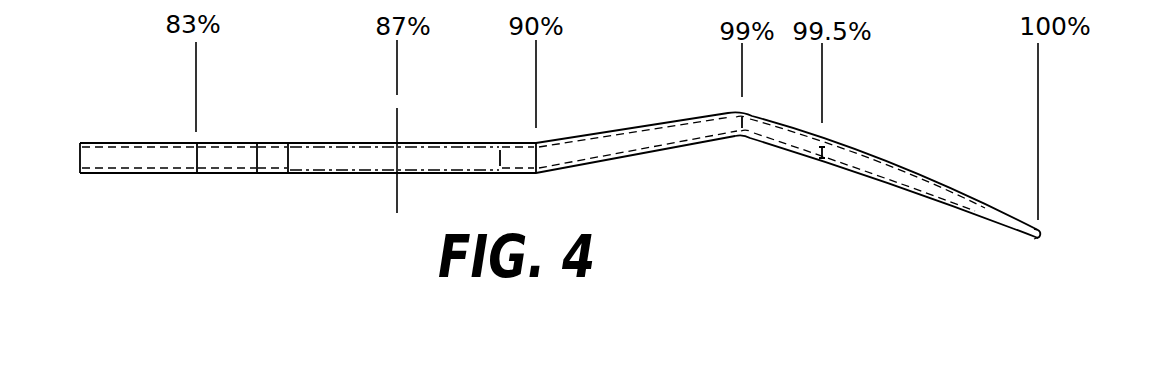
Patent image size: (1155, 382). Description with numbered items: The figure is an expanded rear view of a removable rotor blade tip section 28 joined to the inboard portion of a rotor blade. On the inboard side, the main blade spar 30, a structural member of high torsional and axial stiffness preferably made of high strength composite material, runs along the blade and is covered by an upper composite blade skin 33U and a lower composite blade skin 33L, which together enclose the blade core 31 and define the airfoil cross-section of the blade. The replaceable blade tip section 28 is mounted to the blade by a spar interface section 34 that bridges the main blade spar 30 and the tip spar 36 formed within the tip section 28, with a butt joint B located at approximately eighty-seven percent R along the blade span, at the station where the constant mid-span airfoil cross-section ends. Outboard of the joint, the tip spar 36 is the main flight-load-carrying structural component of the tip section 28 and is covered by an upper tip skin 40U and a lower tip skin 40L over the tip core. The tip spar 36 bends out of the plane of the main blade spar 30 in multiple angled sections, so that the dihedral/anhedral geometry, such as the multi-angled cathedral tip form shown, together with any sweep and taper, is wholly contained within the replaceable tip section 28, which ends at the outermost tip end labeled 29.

The replaceable blade tip section 28 is at (906, 146).
The tip end 29 is at (1042, 233).
The main blade spar 30 is at (225, 143).
The blade core 31 is at (292, 172).
The upper composite blade skin 33U is at (138, 143).
The lower composite blade skin 33L is at (145, 173).
The spar interface section 34 is at (450, 155).
The tip spar 36 is at (663, 125).
The upper tip skin 40U is at (617, 128).
The lower tip skin 40L is at (625, 157).
The butt joint B is at (398, 127).